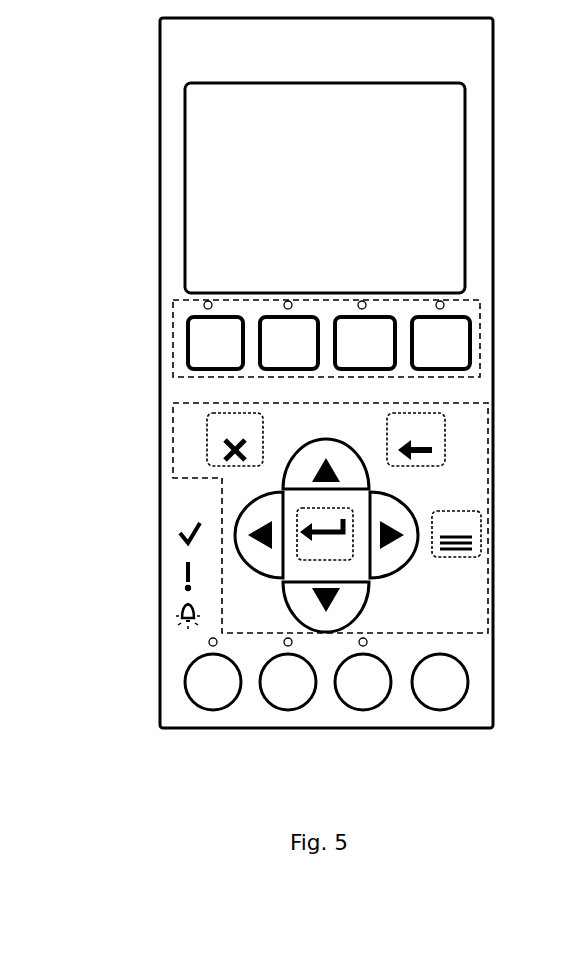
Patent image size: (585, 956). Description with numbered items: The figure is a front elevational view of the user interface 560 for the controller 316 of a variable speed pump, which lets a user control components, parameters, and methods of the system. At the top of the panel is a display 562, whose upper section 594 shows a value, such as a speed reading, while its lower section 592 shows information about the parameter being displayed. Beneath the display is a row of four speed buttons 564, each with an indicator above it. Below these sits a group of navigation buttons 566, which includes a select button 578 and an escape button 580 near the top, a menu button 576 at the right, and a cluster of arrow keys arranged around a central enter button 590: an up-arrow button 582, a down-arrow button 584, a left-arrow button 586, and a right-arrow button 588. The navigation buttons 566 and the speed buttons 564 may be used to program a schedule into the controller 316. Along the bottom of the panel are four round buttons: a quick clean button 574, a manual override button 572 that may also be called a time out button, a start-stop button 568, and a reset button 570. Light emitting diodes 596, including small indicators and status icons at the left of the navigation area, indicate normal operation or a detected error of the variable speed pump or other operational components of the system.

The controller 316 is at (105, 70).
The user interface 560 is at (88, 135).
The display 562 is at (450, 182).
The speed button 564 is at (477, 358).
The navigation buttons 566 is at (467, 610).
The start-stop button 568 is at (362, 708).
The reset button 570 is at (443, 698).
The manual override button 572 is at (270, 692).
The quick clean button 574 is at (210, 700).
The menu button 576 is at (460, 515).
The select button 578 is at (205, 438).
The escape button 580 is at (437, 438).
The up-arrow button 582 is at (320, 440).
The down-arrow button 584 is at (302, 605).
The left-arrow button 586 is at (275, 515).
The right-arrow button 588 is at (387, 510).
The enter button 590 is at (347, 542).
The lower section 592 is at (195, 228).
The upper section 594 is at (208, 143).
The light emitting diodes 596 is at (204, 305).